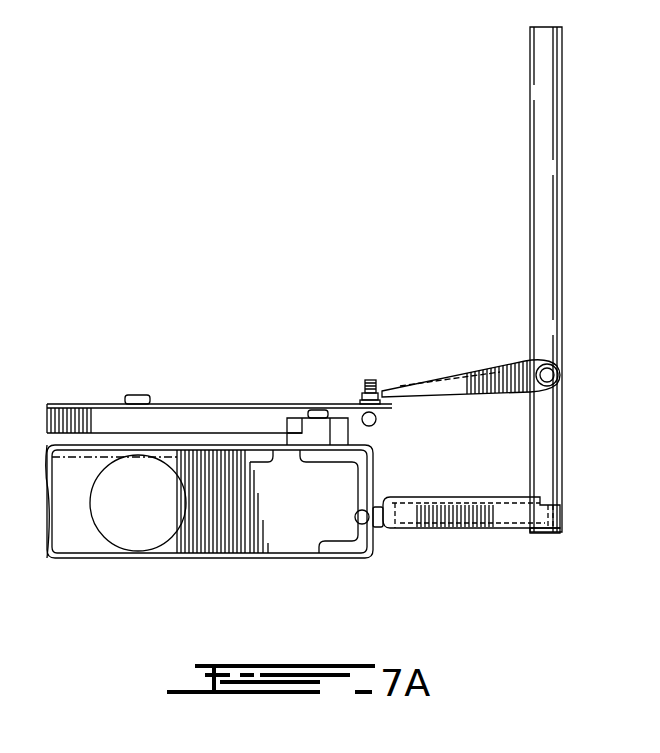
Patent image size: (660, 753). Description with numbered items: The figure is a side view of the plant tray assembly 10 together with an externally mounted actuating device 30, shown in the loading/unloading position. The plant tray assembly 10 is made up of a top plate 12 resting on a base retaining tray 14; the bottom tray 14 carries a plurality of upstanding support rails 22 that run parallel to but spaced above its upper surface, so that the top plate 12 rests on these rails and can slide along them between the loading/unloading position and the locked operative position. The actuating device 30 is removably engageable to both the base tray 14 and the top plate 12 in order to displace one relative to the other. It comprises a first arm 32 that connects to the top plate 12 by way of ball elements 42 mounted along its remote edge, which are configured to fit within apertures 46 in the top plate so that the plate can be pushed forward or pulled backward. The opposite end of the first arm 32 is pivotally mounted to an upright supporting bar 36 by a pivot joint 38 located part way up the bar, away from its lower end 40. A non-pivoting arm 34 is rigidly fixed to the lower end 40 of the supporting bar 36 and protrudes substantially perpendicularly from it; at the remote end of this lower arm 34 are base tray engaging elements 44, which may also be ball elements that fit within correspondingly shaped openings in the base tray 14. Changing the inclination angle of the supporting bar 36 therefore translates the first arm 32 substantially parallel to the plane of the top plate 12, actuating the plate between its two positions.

The plant tray assembly 10 is at (166, 345).
The top plate 12 is at (94, 385).
The base retaining tray 14 is at (183, 572).
The support rails 22 is at (237, 402).
The actuating device 30 is at (468, 318).
The first arm 32 is at (414, 365).
The non-pivoting arm 34 is at (466, 548).
The supporting bar 36 is at (572, 128).
The pivot joint 38 is at (572, 368).
The lower end 40 is at (578, 523).
The ball elements 42 is at (377, 424).
The base tray engaging elements 44 is at (366, 558).
The apertures 46 is at (358, 393).